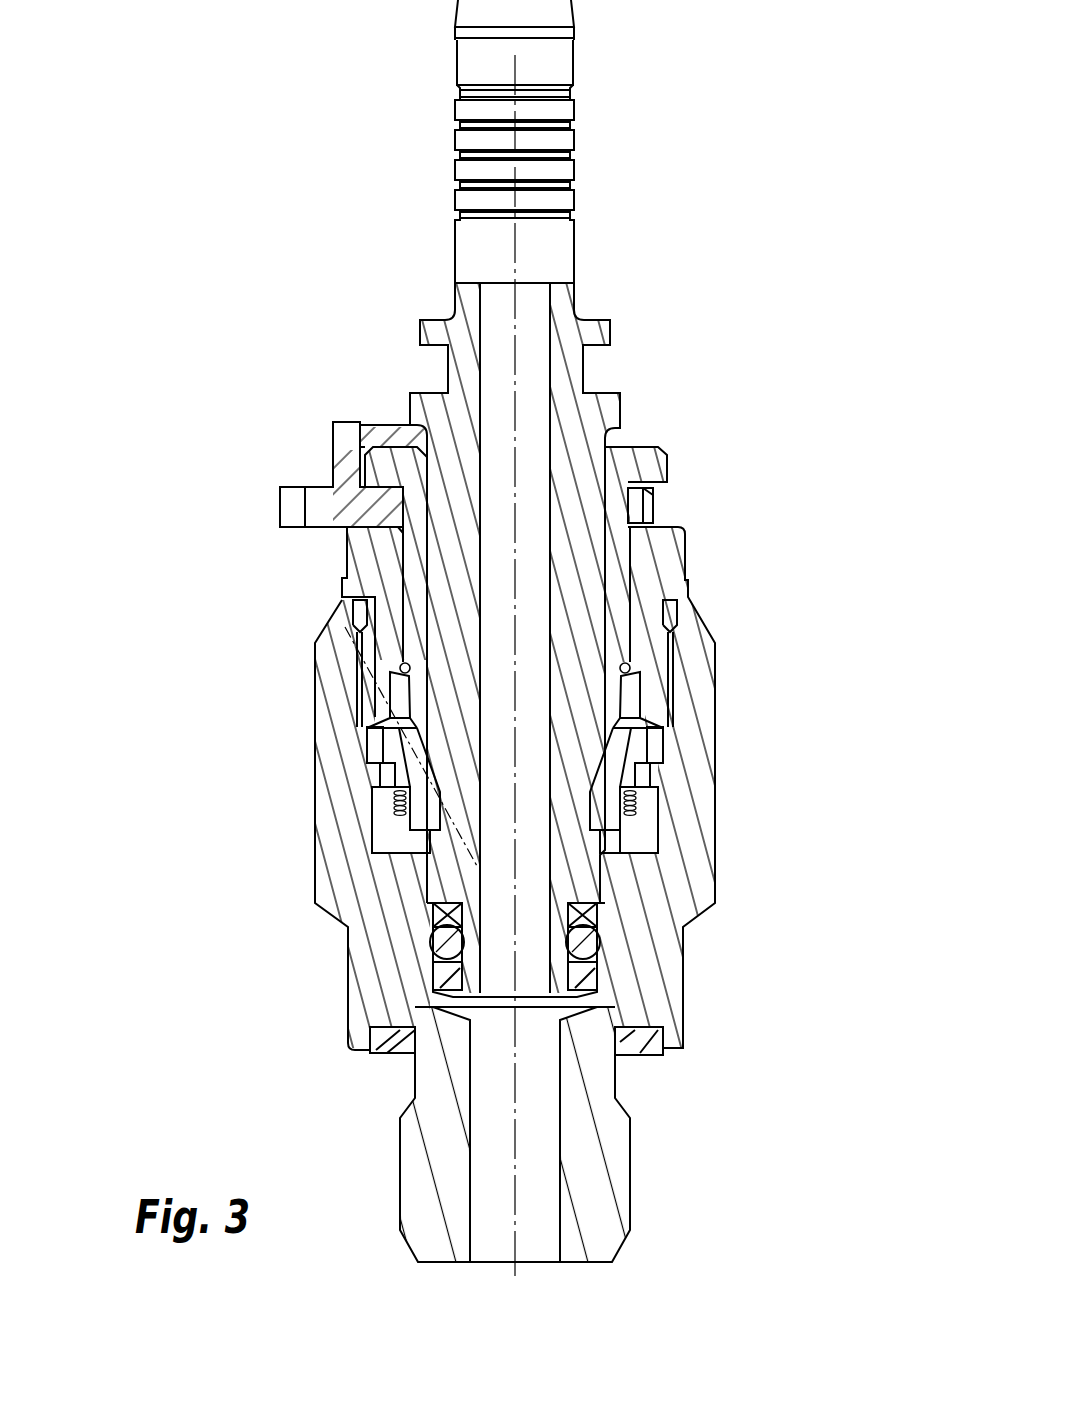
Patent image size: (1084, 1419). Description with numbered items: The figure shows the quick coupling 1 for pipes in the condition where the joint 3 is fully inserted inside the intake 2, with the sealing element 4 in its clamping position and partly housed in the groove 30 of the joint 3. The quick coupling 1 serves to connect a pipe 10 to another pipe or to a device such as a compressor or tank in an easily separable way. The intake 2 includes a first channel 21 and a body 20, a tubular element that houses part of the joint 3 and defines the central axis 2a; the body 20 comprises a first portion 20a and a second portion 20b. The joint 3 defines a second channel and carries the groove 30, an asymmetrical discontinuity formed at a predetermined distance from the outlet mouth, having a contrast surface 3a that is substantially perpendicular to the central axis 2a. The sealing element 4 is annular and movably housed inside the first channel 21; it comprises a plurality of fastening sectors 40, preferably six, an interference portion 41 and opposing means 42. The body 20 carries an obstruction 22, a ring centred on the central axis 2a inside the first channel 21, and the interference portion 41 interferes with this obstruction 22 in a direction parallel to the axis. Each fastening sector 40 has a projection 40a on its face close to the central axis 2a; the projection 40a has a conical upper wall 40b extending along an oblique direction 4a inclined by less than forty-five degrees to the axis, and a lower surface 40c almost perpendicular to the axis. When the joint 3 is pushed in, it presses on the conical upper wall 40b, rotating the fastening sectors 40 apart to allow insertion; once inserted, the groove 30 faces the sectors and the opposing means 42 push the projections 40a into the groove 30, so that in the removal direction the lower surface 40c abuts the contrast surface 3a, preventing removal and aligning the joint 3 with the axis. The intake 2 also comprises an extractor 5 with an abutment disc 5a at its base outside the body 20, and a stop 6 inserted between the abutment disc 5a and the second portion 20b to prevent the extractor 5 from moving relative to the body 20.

The quick coupling 1 is at (790, 131).
The intake 2 is at (748, 1115).
The central axis 2a is at (518, 1268).
The joint 3 is at (448, 618).
The contrast surface 3a is at (477, 866).
The sealing element 4 is at (570, 823).
The oblique direction 4a is at (345, 628).
The extractor 5 is at (696, 497).
The abutment disc 5a is at (655, 455).
The stop 6 is at (343, 458).
The pipe 10 is at (467, 172).
The body 20 is at (318, 878).
The first portion 20a is at (705, 680).
The second portion 20b is at (350, 537).
The first channel 21 is at (500, 1067).
The obstruction 22 is at (658, 770).
The groove 30 is at (437, 787).
The fastening sectors 40 is at (613, 793).
The projection 40a is at (440, 813).
The conical upper wall 40b is at (370, 743).
The lower surface 40c is at (620, 830).
The interference portion 41 is at (652, 747).
The opposing means 42 is at (393, 800).